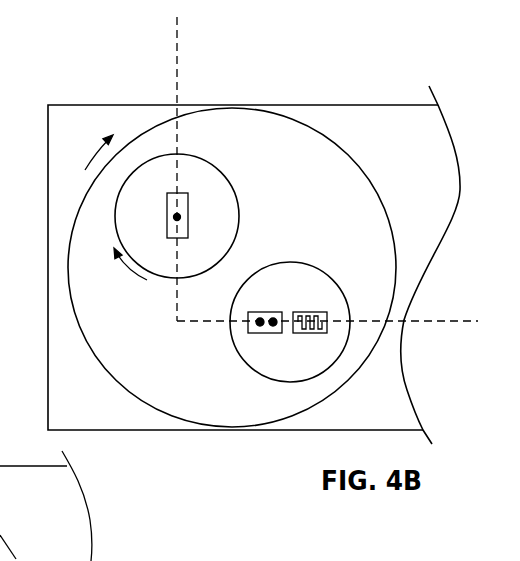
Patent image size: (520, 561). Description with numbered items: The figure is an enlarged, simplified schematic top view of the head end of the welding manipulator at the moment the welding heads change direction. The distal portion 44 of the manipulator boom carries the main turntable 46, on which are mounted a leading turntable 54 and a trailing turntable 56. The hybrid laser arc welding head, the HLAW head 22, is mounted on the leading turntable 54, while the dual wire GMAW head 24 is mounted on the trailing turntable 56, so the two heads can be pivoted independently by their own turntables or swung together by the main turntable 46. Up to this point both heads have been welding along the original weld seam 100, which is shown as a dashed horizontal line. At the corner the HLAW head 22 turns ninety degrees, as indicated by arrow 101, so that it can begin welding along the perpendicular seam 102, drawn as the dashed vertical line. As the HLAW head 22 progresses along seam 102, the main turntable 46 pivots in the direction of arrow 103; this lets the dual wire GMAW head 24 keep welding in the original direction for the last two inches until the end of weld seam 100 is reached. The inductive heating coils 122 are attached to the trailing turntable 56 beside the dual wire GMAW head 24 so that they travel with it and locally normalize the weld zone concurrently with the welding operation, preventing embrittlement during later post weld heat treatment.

The HLAW head 22 is at (167, 228).
The dual wire GMAW head 24 is at (267, 311).
The distal portion of the manipulator boom 44 is at (167, 431).
The main turntable 46 is at (202, 370).
The leading turntable 54 is at (230, 226).
The trailing turntable 56 is at (302, 365).
The weld seam 100 is at (445, 321).
The arrow 101 is at (125, 268).
The seam 102 is at (177, 48).
The arrow 103 is at (88, 153).
The inductive heating coils 122 is at (311, 311).